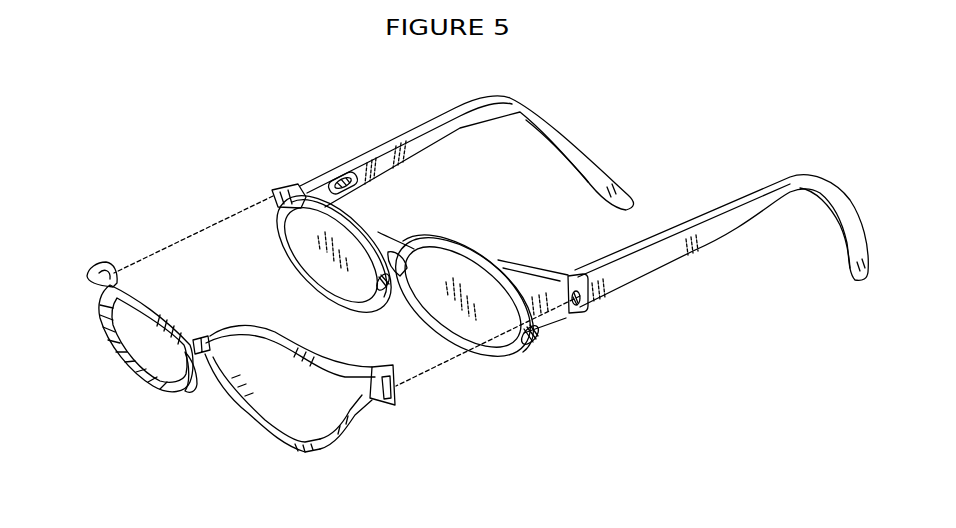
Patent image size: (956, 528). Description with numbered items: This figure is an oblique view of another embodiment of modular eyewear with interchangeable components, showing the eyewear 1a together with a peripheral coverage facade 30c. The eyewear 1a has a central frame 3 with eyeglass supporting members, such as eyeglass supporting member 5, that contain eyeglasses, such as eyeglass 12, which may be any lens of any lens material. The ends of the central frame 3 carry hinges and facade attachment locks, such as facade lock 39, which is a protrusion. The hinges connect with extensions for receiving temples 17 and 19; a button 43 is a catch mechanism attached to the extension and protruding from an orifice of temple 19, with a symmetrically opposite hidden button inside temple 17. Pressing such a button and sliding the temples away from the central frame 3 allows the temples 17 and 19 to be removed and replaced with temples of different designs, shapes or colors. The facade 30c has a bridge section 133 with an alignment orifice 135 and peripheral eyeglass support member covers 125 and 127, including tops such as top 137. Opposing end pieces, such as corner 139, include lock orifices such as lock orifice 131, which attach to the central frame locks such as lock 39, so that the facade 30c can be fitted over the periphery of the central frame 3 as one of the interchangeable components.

The eyewear 1a is at (594, 124).
The central frame 3 is at (448, 238).
The eyeglass supporting member 5 is at (353, 308).
The eyeglass 12 is at (438, 308).
The temple 17 is at (673, 258).
The temple 19 is at (422, 125).
The facade lock 39 is at (589, 308).
The button 43 is at (337, 172).
The facade 30c is at (116, 387).
The peripheral cover 125 is at (257, 425).
The peripheral cover 127 is at (113, 347).
The lock orifice 131 is at (397, 390).
The bridge section 133 is at (195, 388).
The alignment orifice 135 is at (188, 348).
The top 137 is at (150, 298).
The corner 139 is at (360, 418).